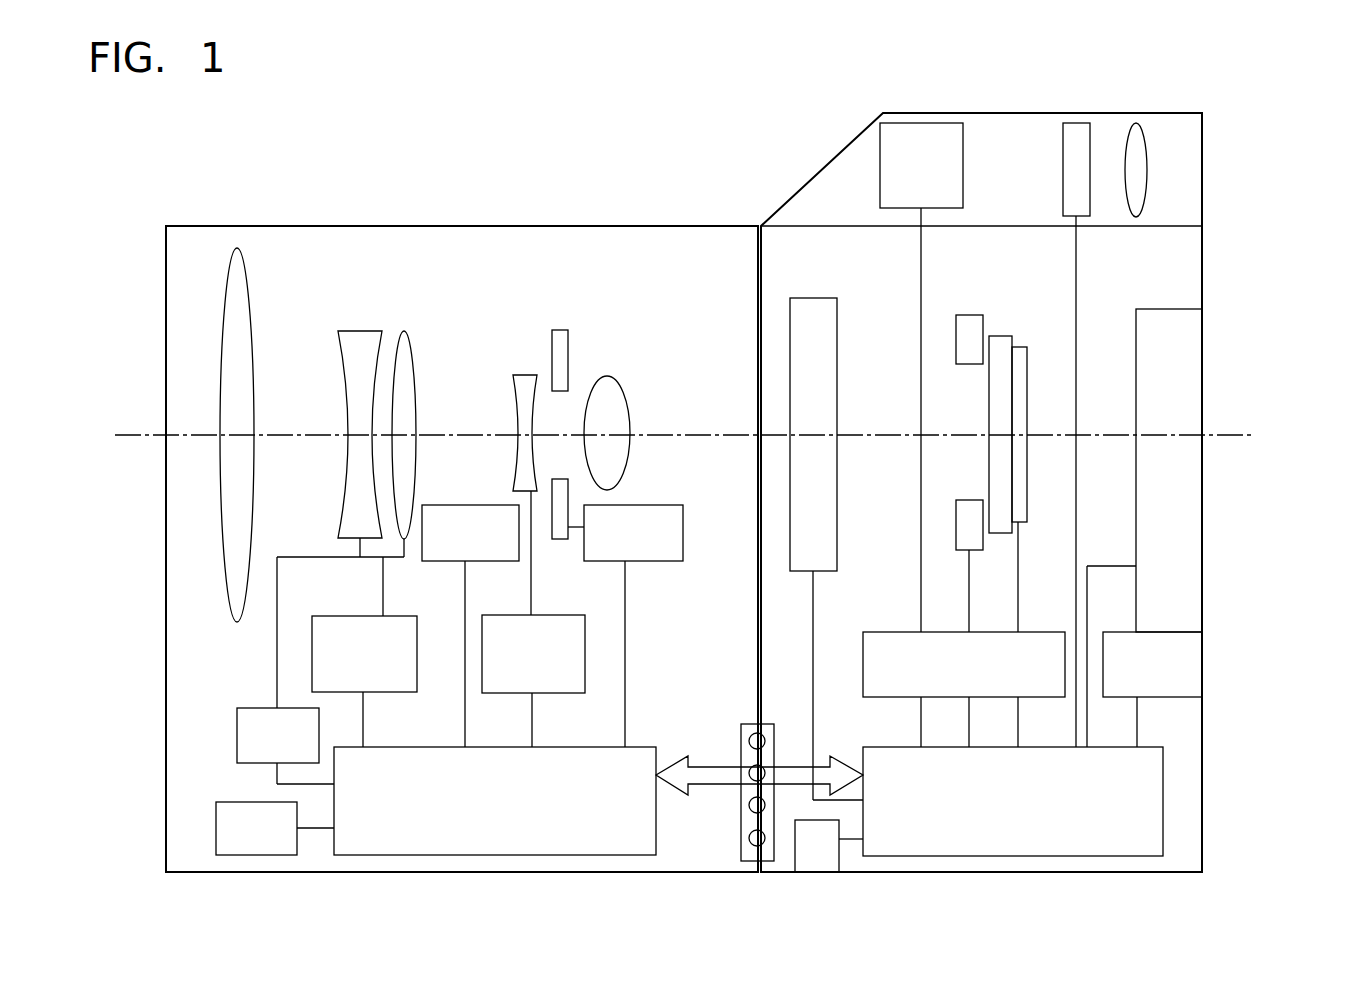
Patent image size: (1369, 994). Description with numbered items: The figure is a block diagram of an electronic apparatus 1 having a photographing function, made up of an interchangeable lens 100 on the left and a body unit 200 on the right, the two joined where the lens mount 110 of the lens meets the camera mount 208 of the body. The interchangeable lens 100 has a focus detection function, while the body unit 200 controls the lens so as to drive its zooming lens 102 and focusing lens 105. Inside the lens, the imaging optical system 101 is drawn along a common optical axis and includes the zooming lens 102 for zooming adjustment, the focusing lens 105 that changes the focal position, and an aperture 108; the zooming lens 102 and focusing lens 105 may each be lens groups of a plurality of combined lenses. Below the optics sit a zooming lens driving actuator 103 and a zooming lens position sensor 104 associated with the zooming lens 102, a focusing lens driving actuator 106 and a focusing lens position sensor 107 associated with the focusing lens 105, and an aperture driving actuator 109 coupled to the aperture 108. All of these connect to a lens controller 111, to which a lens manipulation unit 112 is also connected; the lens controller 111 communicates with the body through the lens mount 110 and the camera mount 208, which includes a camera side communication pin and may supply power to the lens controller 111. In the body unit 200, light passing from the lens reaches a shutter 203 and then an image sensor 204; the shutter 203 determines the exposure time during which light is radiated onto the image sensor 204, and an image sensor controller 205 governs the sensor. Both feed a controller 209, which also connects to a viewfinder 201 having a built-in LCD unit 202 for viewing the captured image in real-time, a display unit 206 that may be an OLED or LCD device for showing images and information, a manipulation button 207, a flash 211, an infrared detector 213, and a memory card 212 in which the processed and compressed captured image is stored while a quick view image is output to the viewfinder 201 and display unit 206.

The electronic apparatus 1 is at (697, 117).
The interchangeable lens 100 is at (496, 220).
The imaging optical system 101 is at (711, 270).
The zooming lens 102 is at (361, 331).
The zooming lens driving actuator 103 is at (267, 708).
The zooming lens position sensor 104 is at (417, 616).
The focusing lens 105 is at (523, 375).
The focusing lens driving actuator 106 is at (472, 505).
The focusing lens position sensor 107 is at (548, 615).
The aperture 108 is at (561, 330).
The aperture driving actuator 109 is at (657, 505).
The lens mount 110 is at (752, 724).
The lens controller 111 is at (548, 747).
The lens manipulation unit 112 is at (243, 799).
The body unit 200 is at (1218, 147).
The viewfinder 201 is at (1155, 113).
The liquid crystal display (LCD) unit 202 is at (1075, 123).
The shutter 203 is at (970, 315).
The image sensor 204 is at (1000, 336).
The image sensor controller 205 is at (878, 632).
The display unit 206 is at (1202, 343).
The manipulation button 207 is at (1176, 632).
The camera mount 208 is at (765, 724).
The controller 209 is at (1163, 800).
The flash 211 is at (921, 123).
The memory card 212 is at (817, 872).
The infrared detector 213 is at (816, 298).